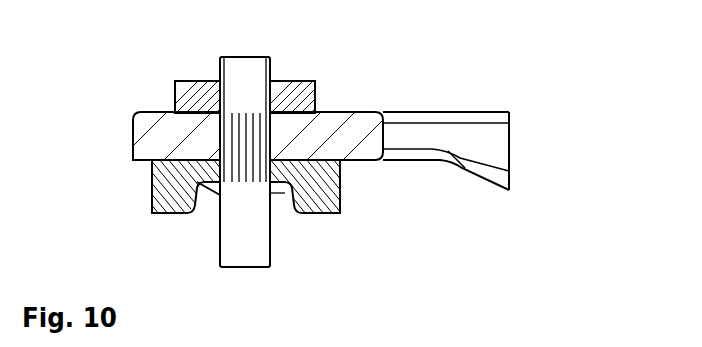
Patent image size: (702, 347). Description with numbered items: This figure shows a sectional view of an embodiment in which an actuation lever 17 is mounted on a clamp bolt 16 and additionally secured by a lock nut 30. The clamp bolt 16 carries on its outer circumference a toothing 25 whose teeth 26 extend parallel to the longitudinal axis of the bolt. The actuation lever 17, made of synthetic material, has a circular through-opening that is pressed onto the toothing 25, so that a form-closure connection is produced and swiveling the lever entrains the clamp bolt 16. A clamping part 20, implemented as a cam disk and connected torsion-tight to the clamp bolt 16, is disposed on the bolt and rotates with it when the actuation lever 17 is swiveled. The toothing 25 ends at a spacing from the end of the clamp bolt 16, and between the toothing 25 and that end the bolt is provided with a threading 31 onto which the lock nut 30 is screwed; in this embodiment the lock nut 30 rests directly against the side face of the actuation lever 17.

The clamp bolt 16 is at (250, 138).
The actuation lever 17 is at (429, 109).
The clamping part 20 is at (345, 186).
The toothing 25 is at (230, 186).
The teeth 26 is at (176, 88).
The lock nut 30 is at (315, 82).
The threading 31 is at (273, 68).